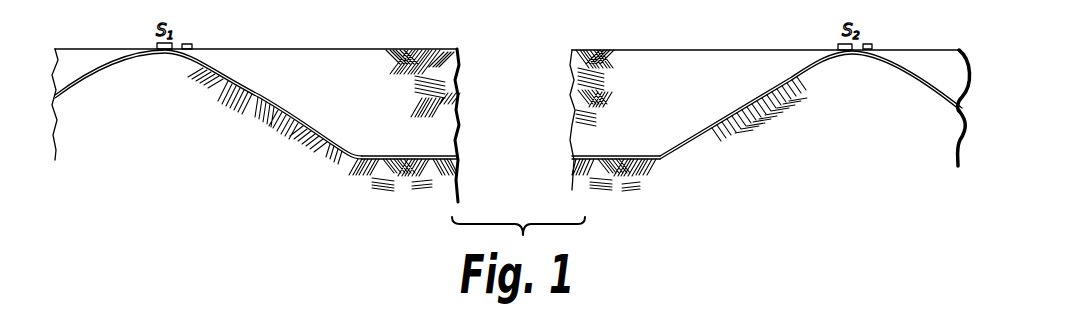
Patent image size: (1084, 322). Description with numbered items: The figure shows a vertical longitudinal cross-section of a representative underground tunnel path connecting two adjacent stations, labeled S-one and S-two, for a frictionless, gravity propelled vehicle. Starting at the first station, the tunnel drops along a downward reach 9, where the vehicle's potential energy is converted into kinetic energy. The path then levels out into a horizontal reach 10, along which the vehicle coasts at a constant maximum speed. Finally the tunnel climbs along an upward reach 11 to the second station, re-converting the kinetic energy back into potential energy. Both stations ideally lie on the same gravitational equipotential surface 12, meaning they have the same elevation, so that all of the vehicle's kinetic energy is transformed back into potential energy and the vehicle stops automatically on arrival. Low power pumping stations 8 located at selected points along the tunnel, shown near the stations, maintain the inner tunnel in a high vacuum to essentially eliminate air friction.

The pumping station 8 is at (196, 47).
The downward reach 9 is at (272, 100).
The horizontal reach 10 is at (413, 153).
The upward reach 11 is at (742, 100).
The gravitational equipotential surface 12 is at (394, 50).